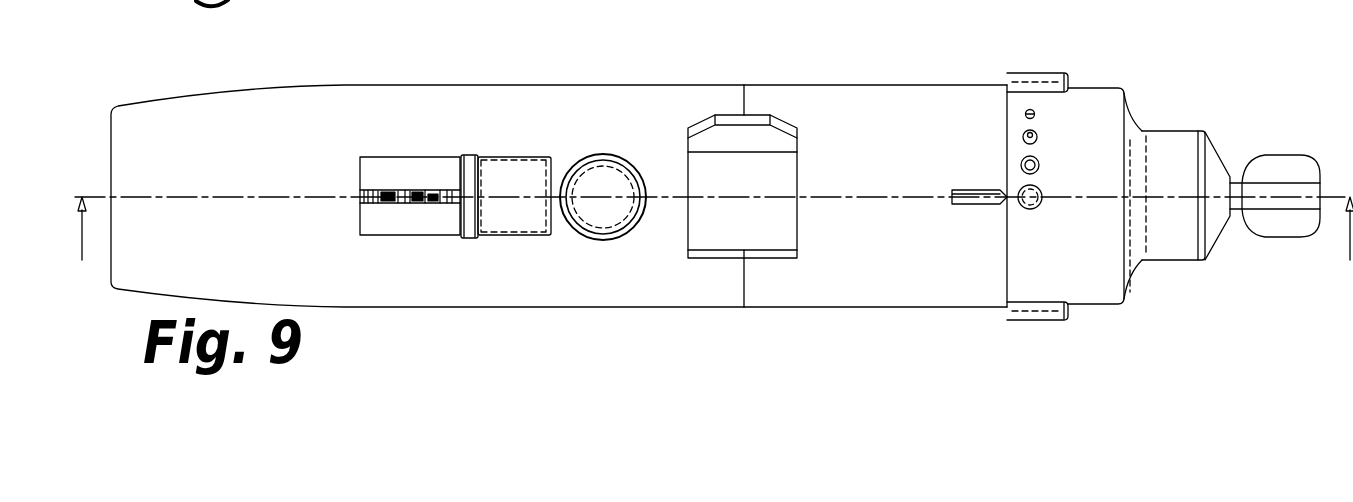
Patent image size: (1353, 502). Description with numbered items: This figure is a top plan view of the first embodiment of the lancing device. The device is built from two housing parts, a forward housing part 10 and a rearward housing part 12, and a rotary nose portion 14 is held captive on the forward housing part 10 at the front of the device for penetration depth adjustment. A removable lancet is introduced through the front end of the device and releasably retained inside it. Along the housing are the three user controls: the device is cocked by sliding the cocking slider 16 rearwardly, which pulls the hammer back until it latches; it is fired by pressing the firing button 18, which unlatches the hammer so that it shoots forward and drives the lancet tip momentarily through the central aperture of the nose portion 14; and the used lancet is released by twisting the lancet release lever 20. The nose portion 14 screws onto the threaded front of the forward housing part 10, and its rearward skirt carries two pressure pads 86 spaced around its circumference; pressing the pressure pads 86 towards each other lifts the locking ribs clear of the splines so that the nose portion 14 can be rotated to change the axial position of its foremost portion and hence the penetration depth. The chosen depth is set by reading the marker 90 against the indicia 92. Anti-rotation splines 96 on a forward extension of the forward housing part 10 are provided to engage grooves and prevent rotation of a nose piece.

The forward housing part 10 is at (893, 85).
The rearward housing part 12 is at (432, 85).
The rotary nose portion 14 is at (1110, 80).
The cocking slider 16 is at (520, 227).
The firing button 18 is at (613, 208).
The lancet release lever 20 is at (730, 109).
The pressure pads 86 is at (1043, 316).
The marker 90 is at (963, 191).
The indicia 92 is at (1041, 163).
The anti-rotation splines 96 is at (1045, 73).